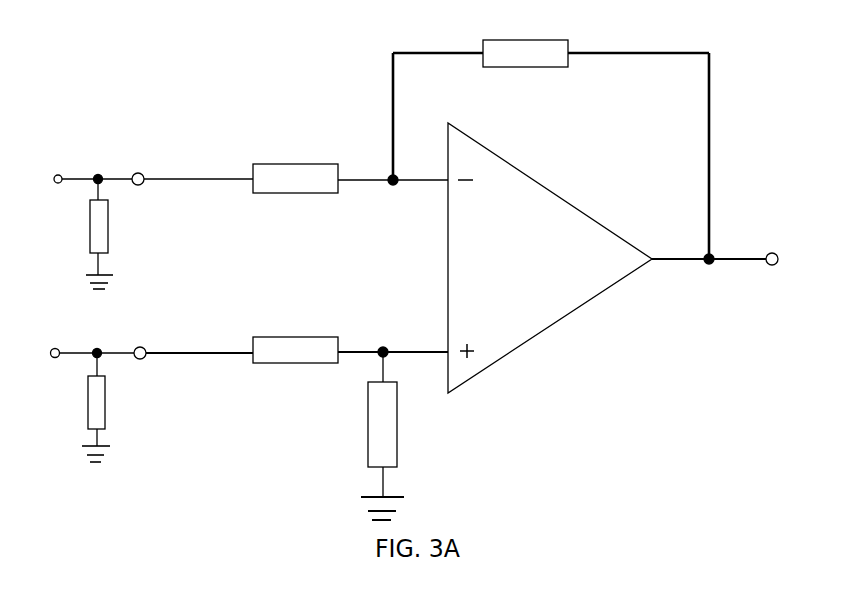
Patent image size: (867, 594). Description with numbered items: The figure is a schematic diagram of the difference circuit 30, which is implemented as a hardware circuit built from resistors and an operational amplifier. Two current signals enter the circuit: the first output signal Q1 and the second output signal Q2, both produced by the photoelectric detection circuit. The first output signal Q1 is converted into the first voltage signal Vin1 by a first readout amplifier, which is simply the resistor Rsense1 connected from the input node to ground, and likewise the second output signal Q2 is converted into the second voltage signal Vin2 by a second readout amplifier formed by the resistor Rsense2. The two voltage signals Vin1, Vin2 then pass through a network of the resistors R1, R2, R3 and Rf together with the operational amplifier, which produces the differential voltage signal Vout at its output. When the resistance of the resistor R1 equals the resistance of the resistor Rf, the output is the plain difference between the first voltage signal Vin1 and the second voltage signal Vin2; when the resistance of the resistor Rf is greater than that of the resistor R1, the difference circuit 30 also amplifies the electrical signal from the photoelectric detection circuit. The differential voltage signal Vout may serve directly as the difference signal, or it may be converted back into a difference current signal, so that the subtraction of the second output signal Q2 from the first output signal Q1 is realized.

The difference circuit 30 is at (175, 72).
The first output signal Q1 is at (82, 335).
The second output signal Q2 is at (79, 157).
The first voltage signal Vin1 is at (186, 333).
The second voltage signal Vin2 is at (185, 157).
The resistor R1 is at (350, 164).
The resistor R2 is at (350, 336).
The resistor R3 is at (399, 436).
The feedback resistor Rf is at (551, 149).
The resistor Rsense1 is at (124, 407).
The resistor Rsense2 is at (127, 234).
The differential voltage signal Vout is at (723, 241).